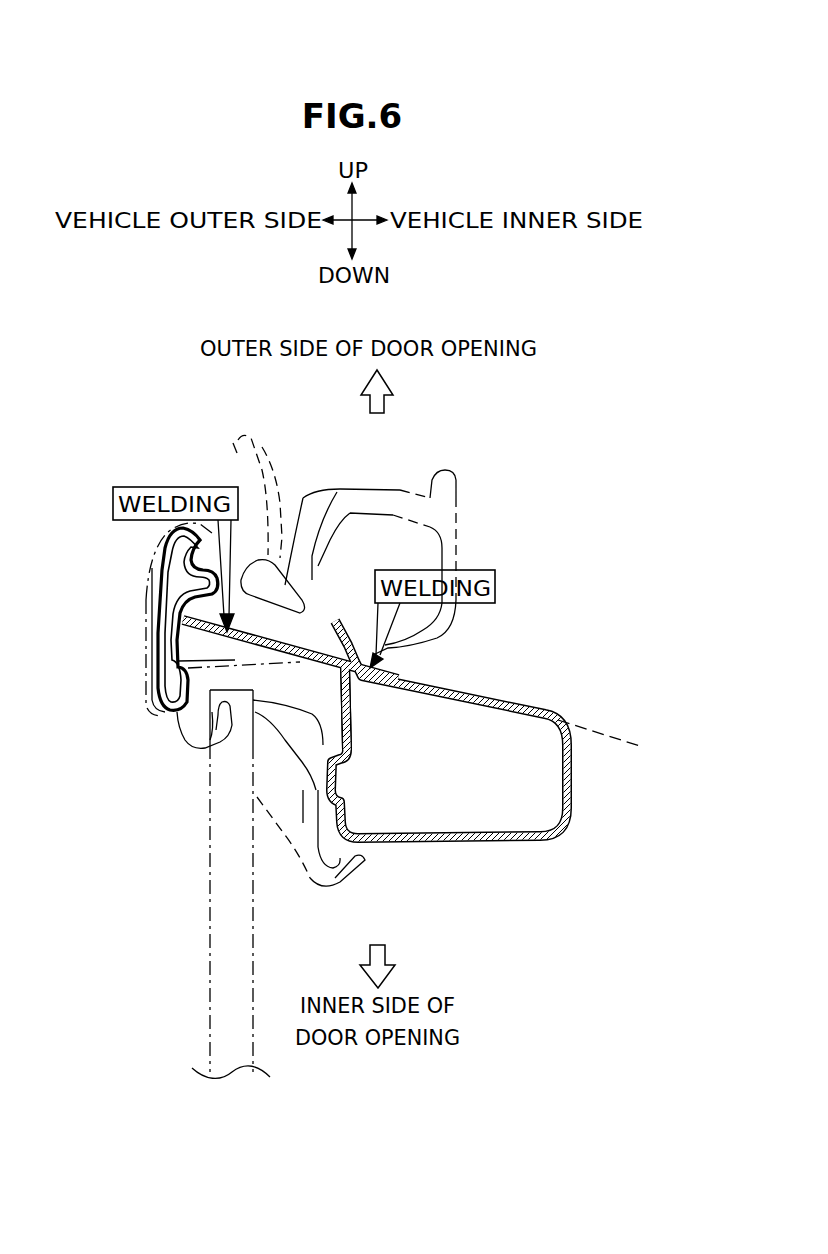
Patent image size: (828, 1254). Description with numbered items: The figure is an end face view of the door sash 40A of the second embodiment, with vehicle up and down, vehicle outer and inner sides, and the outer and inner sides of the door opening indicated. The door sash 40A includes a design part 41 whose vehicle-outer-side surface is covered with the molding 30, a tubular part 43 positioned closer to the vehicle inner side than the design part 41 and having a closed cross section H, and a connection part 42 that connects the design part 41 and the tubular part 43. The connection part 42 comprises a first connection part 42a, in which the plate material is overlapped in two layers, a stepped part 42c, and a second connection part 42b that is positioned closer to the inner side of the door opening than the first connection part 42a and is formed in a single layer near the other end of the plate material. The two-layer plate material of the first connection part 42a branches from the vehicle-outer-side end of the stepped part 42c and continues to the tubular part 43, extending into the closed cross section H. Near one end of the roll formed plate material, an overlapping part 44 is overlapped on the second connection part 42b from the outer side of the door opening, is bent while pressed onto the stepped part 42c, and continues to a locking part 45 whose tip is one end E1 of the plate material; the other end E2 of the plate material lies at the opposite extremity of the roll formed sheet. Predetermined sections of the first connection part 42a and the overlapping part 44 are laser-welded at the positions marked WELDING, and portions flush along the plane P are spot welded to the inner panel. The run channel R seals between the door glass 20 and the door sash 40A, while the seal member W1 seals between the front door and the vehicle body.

The door glass 20 is at (210, 980).
The molding 30 is at (146, 649).
The door sash 40A is at (572, 640).
The design part 41 is at (185, 712).
The connection part 42 is at (292, 652).
The first connection part 42a is at (285, 524).
The second connection part 42b is at (352, 690).
The stepped part 42c is at (256, 725).
The tubular part 43 is at (463, 838).
The overlapping part 44 is at (422, 655).
The locking part 45 is at (354, 622).
The one end of the plate material E1 is at (343, 612).
The second end E2 is at (407, 692).
The closed cross section H is at (460, 784).
The plane P is at (606, 739).
The run channel R is at (332, 880).
The seal member W1 is at (458, 540).